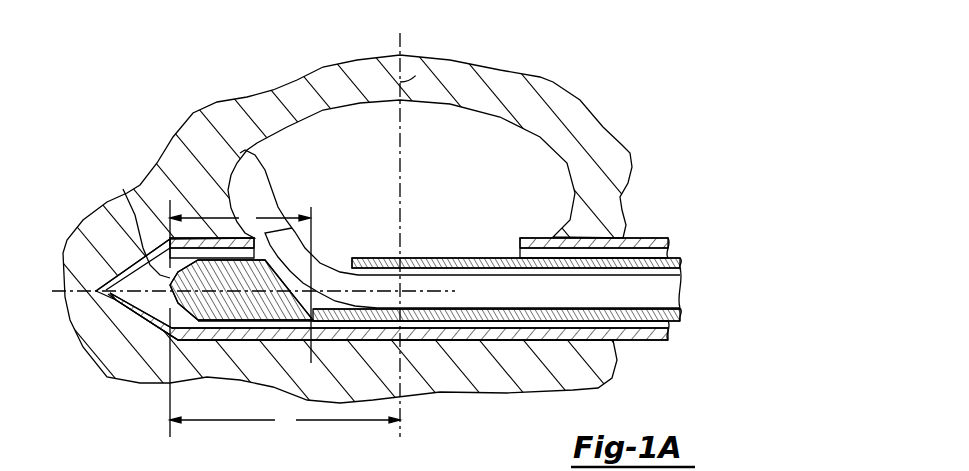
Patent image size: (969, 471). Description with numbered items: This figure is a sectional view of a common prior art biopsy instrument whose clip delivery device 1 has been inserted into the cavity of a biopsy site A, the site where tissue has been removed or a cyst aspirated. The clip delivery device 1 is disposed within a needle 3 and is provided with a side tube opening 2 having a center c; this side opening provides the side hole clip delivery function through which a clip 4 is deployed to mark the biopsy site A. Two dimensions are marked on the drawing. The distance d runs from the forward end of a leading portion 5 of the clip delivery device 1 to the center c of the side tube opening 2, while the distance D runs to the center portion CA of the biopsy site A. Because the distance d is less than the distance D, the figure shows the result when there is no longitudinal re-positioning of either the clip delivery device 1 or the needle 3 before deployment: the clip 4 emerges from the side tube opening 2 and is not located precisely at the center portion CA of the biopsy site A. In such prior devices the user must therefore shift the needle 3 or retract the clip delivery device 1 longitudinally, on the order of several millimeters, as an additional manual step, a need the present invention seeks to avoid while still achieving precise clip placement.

The clip delivery device 1 is at (653, 146).
The side tube opening 2 is at (340, 258).
The needle 3 is at (632, 338).
The clip 4 is at (281, 157).
The leading portion 5 is at (130, 197).
The biopsy site A is at (537, 164).
The center of side tube opening c is at (311, 207).
The center portion of biopsy site CA is at (418, 64).
The distance from leading portion to opening center d is at (240, 234).
The distance to biopsy site center D is at (285, 372).